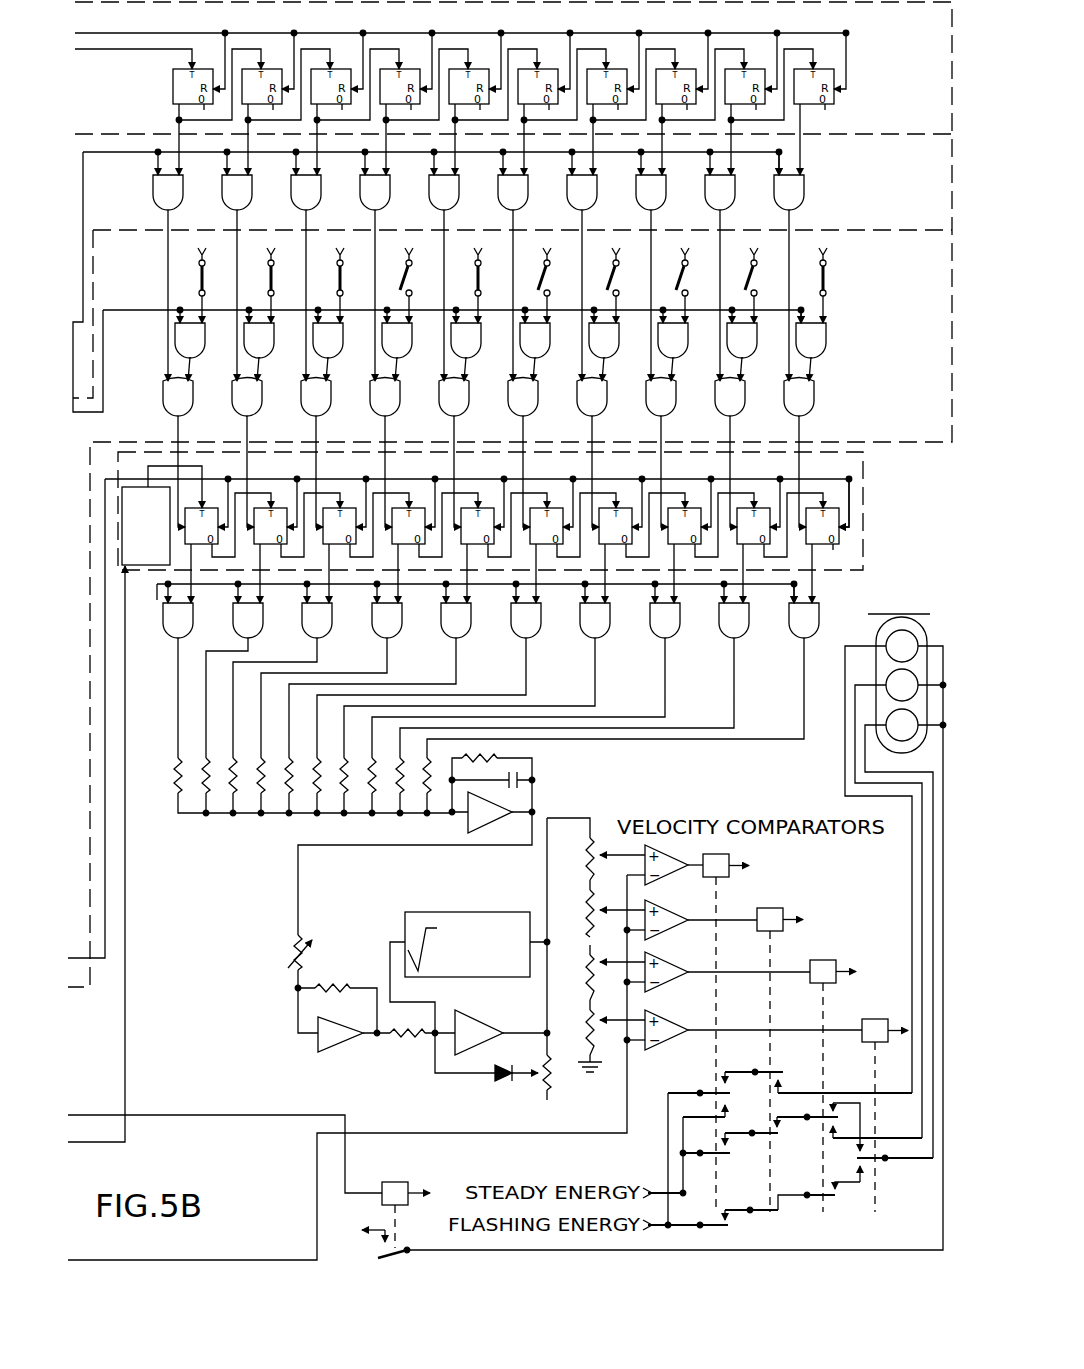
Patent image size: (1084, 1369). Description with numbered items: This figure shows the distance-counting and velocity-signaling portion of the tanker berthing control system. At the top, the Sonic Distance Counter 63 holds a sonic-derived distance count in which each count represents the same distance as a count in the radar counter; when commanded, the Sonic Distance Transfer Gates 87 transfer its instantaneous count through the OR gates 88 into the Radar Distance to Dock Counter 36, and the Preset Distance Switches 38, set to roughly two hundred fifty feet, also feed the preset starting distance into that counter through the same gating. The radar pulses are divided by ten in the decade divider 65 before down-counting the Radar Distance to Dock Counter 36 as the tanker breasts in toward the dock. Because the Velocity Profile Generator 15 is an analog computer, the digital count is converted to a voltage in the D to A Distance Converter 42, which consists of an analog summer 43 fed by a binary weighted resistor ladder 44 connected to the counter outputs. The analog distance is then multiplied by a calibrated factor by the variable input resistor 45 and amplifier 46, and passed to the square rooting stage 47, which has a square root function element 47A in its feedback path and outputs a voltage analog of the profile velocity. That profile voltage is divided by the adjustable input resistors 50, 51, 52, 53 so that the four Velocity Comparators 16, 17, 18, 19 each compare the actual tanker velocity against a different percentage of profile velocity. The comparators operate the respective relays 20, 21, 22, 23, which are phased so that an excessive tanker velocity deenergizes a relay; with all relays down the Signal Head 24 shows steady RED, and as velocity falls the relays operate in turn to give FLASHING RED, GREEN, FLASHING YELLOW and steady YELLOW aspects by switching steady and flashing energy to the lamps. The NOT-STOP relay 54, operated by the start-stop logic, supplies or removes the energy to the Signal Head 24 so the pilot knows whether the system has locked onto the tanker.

The Sonic Distance Counter 63 is at (462, 89).
The Sonic Distance Transfer Gates 87 is at (150, 175).
The OR gates 88 is at (160, 381).
The Preset Distance Switches 38 is at (865, 445).
The Radar Distance to Dock Counter 36 is at (864, 538).
The decade divider 65 is at (138, 487).
The D to A Distance Converter 42 is at (476, 758).
The binary weighted resistor ladder 44 is at (170, 790).
The analog summer 43 is at (416, 844).
The Velocity Profile Generator 15 is at (290, 1078).
The variable input resistor 45 is at (311, 963).
The amplifier 46 is at (338, 1052).
The square rooting stage 47 is at (482, 1025).
The square root function element 47A is at (462, 912).
The input resistor 50 is at (588, 858).
The input resistor 51 is at (586, 911).
The input resistor 52 is at (586, 961).
The input resistor 53 is at (588, 1024).
The Velocity Comparator 16 is at (640, 868).
The Velocity Comparator 17 is at (637, 921).
The Velocity Comparator 18 is at (637, 973).
The Velocity Comparator 19 is at (637, 1031).
The relay 20 is at (721, 855).
The relay 21 is at (771, 908).
The relay 22 is at (825, 961).
The relay 23 is at (873, 1019).
The Signal Head 24 is at (878, 632).
The NOT-STOP relay 54 is at (397, 1182).